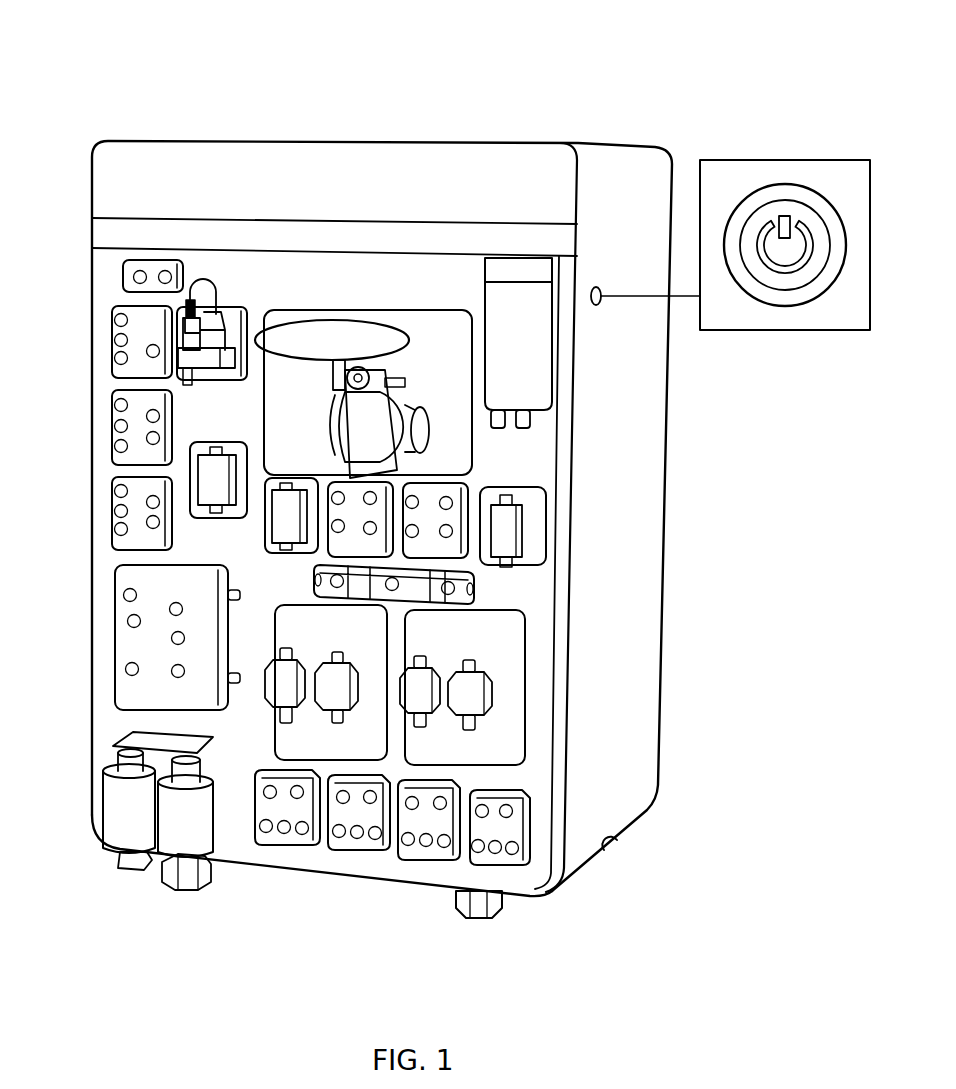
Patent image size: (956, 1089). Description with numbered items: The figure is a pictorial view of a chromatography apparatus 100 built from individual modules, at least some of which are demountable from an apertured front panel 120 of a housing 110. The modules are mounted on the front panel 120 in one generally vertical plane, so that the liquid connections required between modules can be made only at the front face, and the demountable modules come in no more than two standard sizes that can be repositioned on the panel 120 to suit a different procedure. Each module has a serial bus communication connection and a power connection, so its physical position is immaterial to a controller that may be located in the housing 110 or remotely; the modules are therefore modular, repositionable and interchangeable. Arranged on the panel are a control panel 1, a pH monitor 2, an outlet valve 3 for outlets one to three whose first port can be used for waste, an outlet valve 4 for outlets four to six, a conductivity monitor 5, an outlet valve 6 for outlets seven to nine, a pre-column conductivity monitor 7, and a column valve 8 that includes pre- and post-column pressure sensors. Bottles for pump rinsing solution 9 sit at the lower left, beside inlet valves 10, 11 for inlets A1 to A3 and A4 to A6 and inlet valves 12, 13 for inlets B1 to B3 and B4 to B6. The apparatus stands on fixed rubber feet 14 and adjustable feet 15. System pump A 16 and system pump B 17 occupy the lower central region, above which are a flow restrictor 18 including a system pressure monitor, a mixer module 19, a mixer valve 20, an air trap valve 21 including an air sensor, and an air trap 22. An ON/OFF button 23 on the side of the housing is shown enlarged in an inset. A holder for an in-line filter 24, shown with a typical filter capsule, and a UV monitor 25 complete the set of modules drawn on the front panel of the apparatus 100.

The chromatography apparatus 100 is at (86, 111).
The housing 110 is at (283, 142).
The apertured front panel 120 is at (242, 835).
The control panel 1 is at (122, 275).
The pH monitor 2 is at (190, 320).
The outlet valve 1- 3 is at (133, 350).
The outlet valve 4-6 4 is at (138, 418).
The conductivity monitor 5 is at (205, 478).
The outlet valve 7-9 6 is at (137, 514).
The pre-column conductivity monitor 7 is at (258, 542).
The column valve 8 is at (128, 646).
The bottles for pump rinsing solution 9 is at (112, 807).
The inlet valve A1-A3 10 is at (293, 840).
The inlet valve A4-A6 11 is at (362, 850).
The inlet valve B1-B3 12 is at (426, 860).
The inlet valve B4-B6 13 is at (483, 867).
The fixed rubber feet 14 is at (505, 908).
The adjustable feet 15 is at (616, 851).
The system pump A 16 is at (372, 735).
The system pump B 17 is at (512, 733).
The flow restrictor 18 is at (474, 582).
The mixer module 19 is at (527, 515).
The mixer valve 20 is at (543, 488).
The air trap valve 21 is at (380, 495).
The air trap 22 is at (550, 393).
The ON/OFF button 23 is at (784, 216).
The holder for in-line filter 24 is at (410, 400).
The UV monitor 25 is at (318, 343).